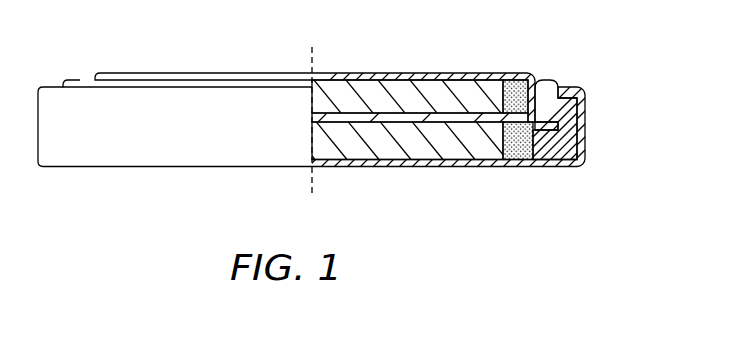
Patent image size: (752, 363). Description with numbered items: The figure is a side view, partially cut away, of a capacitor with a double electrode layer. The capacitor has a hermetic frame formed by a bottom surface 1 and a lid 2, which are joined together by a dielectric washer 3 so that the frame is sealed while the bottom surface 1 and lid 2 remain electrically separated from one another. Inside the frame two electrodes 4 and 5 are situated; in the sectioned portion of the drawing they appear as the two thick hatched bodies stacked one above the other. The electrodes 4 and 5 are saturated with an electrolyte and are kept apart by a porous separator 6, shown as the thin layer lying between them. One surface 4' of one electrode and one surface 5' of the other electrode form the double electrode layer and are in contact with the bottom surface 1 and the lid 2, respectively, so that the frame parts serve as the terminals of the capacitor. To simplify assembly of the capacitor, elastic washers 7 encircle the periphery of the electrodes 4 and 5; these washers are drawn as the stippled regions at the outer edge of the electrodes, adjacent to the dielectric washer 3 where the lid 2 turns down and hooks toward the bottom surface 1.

The bottom surface 1 is at (580, 141).
The lid 2 is at (352, 79).
The dielectric washer 3 is at (570, 96).
The electrode 4 is at (410, 96).
The electrode surface 4' is at (200, 49).
The electrode 5 is at (410, 147).
The electrode surface 5' is at (208, 150).
The porous separator 6 is at (463, 118).
The elastic washers 7 is at (517, 86).